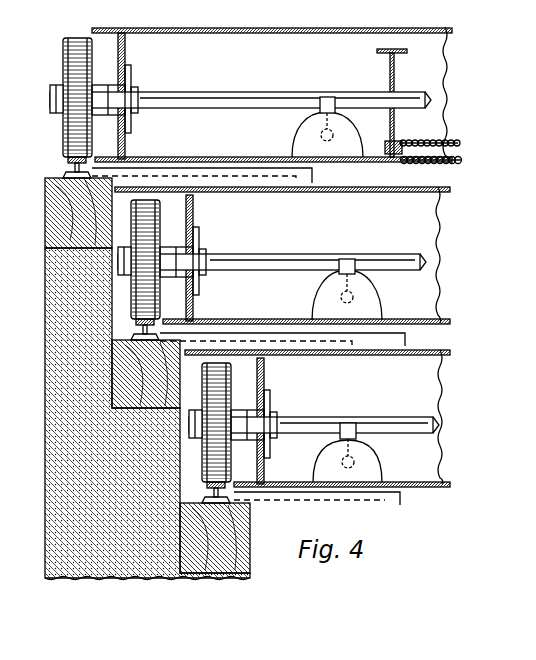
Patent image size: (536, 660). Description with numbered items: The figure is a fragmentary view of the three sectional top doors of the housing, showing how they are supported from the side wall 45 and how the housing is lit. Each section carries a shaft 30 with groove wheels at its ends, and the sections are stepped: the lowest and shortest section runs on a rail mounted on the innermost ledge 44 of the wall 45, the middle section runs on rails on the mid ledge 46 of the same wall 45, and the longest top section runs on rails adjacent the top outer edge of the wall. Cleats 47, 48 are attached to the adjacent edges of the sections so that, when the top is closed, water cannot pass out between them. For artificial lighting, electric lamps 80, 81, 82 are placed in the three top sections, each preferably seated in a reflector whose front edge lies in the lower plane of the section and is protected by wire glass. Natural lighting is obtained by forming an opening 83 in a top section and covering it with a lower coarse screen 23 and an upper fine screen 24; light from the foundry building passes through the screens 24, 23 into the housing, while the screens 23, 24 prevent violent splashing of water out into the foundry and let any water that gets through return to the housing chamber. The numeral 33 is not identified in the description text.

The lower course screen 23 is at (437, 163).
The upper fine screen 24 is at (414, 140).
The shaft 30 is at (239, 93).
The wall 33 is at (126, 413).
The innermost ledge 44 is at (208, 488).
The wall 45 is at (148, 579).
The mid ledge 46 is at (138, 325).
The cleat 47 is at (244, 188).
The cleat 48 is at (221, 161).
The electric lamp 80 is at (300, 138).
The electric lamp 81 is at (323, 296).
The electric lamp 82 is at (326, 468).
The opening 83 is at (388, 148).